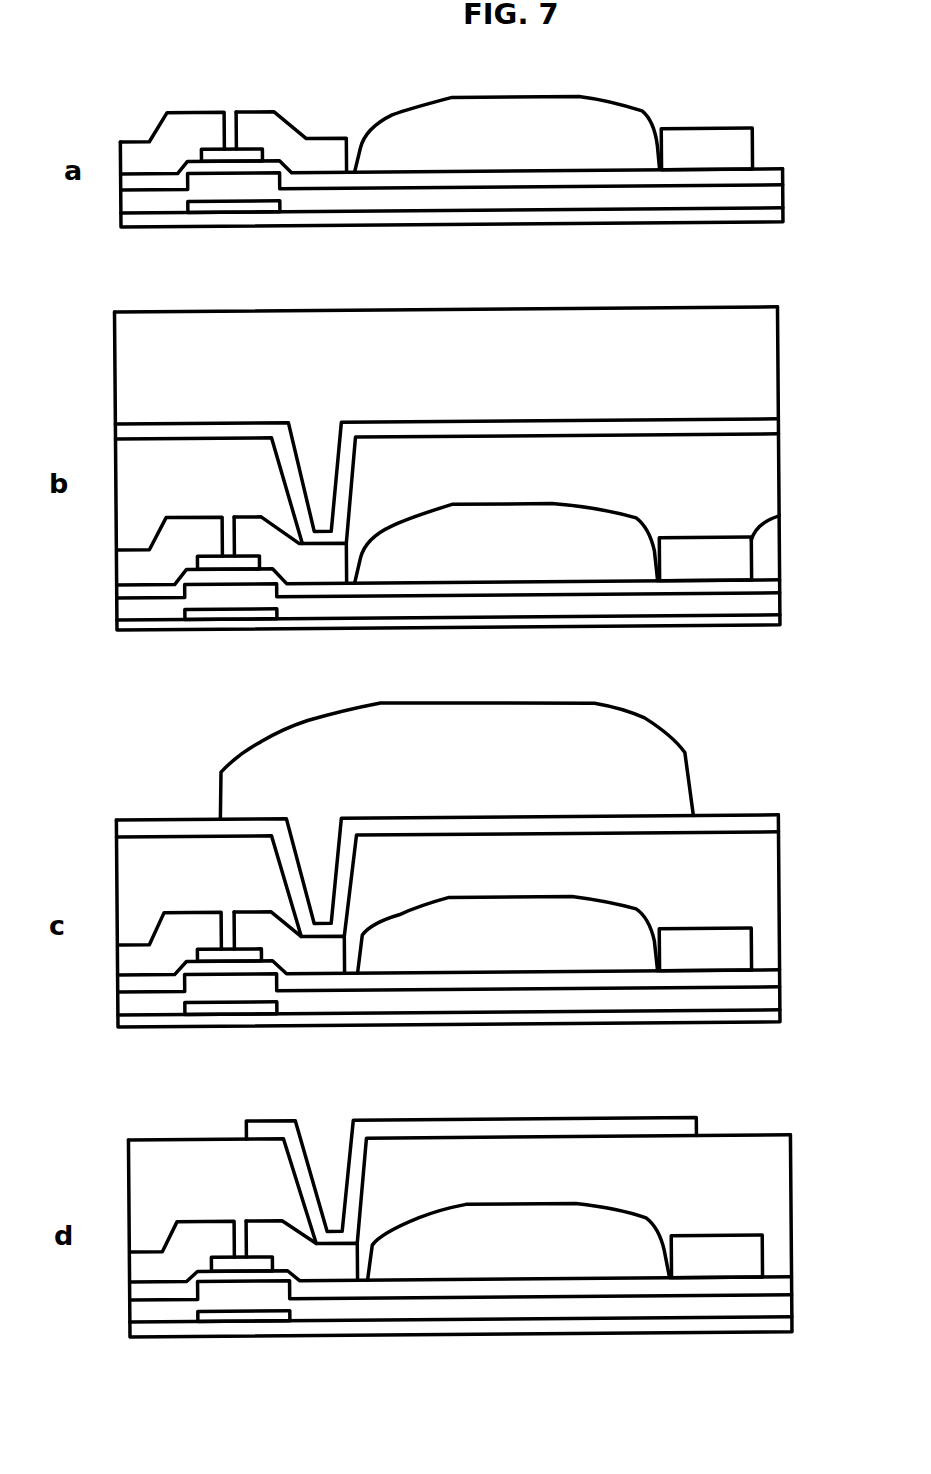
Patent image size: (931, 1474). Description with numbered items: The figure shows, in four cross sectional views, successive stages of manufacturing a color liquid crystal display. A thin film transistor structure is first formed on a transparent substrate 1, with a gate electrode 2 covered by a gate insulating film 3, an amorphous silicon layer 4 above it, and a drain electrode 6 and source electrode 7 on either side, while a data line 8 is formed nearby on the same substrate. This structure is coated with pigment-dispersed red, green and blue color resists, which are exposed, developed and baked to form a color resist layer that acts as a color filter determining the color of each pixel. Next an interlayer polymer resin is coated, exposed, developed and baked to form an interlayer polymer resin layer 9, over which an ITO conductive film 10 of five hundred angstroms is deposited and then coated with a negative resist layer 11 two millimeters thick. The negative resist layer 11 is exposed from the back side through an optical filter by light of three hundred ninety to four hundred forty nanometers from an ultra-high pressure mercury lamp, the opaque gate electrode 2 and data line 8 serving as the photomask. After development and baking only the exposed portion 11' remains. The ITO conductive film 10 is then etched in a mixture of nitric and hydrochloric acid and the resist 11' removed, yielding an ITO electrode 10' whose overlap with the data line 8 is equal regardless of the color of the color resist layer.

The transparent substrate 1 is at (118, 630).
The gate electrode 2 is at (260, 618).
The gate insulating film 3 is at (783, 605).
The amorphous silicon layer 4 is at (783, 587).
The drain electrode 6 is at (190, 522).
The source electrode 7 is at (270, 533).
The data line 8 is at (778, 523).
The interlayer polymer resin layer 9 is at (556, 496).
The ITO conductive film 10 is at (479, 465).
The ITO electrode 10' is at (450, 1147).
The negative resist layer 11 is at (446, 339).
The exposed portion of negative resist layer 11' is at (456, 759).